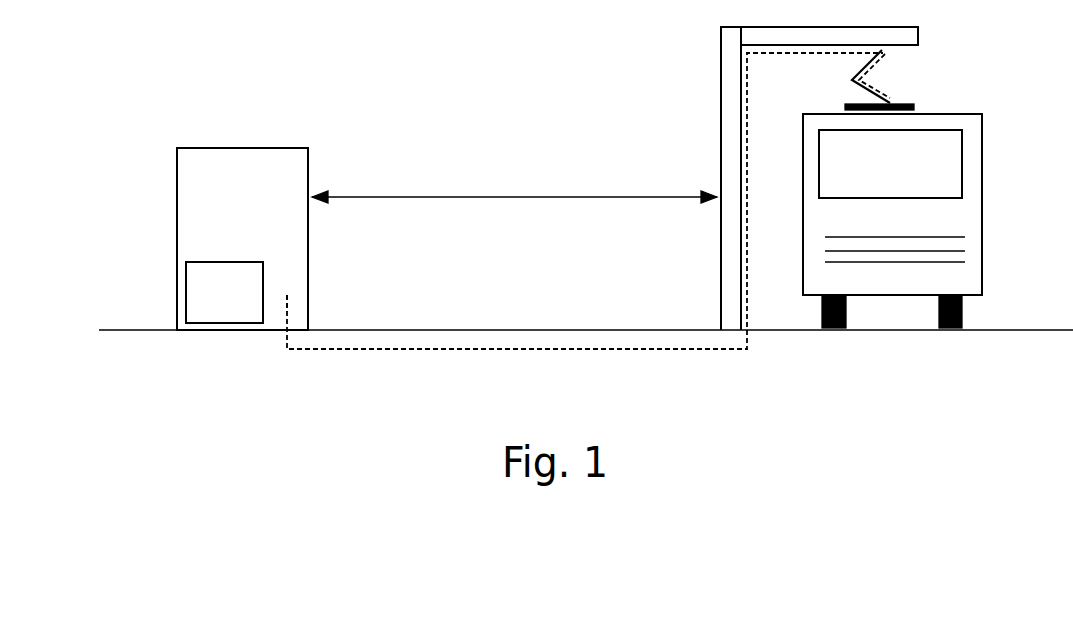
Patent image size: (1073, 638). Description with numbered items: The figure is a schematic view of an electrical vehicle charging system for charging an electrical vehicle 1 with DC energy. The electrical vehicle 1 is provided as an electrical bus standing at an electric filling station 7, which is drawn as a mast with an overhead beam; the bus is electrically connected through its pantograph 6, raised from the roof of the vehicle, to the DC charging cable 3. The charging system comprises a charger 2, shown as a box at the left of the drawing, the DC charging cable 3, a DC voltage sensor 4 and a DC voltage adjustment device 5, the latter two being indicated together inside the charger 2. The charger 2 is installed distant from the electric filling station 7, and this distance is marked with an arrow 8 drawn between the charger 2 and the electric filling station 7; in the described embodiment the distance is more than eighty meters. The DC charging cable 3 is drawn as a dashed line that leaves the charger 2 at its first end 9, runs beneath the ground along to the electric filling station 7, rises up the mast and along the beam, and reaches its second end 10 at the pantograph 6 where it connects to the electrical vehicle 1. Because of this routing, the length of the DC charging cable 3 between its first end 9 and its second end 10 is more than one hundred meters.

The electrical vehicle 1 is at (882, 176).
The charger 2 is at (233, 204).
The DC charging cable 3 is at (368, 350).
The DC voltage sensor 4 is at (224, 292).
The DC voltage adjustment device 5 is at (205, 305).
The pantograph 6 is at (855, 87).
The electric filling station 7 is at (727, 84).
The arrow 8 is at (505, 197).
The first end 9 is at (287, 295).
The second end 10 is at (890, 101).